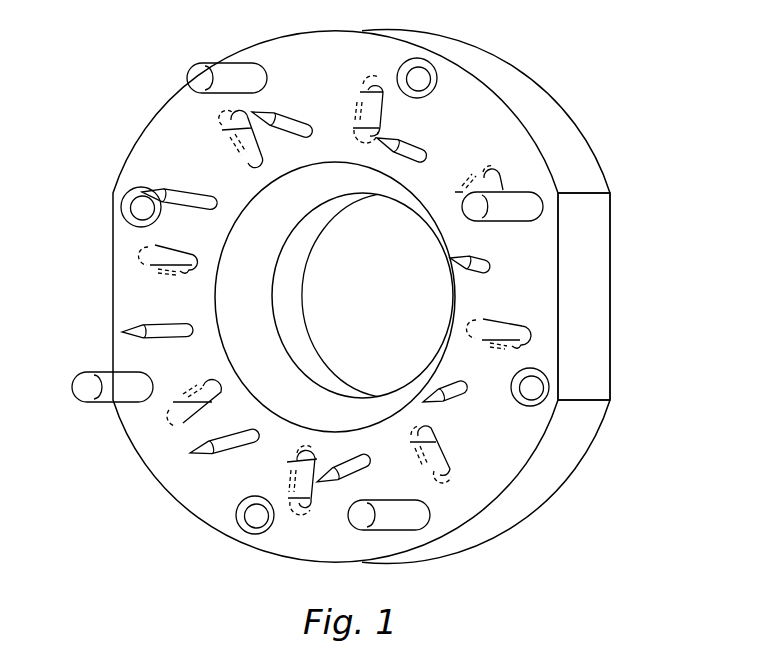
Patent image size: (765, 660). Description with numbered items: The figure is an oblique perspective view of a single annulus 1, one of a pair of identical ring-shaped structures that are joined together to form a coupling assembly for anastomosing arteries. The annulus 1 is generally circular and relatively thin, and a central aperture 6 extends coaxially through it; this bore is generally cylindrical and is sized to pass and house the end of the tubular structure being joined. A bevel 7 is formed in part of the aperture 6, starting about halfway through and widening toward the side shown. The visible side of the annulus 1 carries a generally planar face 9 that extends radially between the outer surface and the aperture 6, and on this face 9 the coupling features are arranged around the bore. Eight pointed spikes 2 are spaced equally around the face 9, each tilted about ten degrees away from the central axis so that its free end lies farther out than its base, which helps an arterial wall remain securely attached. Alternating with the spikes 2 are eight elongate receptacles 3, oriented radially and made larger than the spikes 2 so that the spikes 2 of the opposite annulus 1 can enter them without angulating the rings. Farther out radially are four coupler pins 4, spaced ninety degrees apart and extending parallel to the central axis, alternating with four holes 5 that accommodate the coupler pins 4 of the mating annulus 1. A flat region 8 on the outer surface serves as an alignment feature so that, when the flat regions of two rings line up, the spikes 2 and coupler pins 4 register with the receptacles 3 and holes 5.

The annulus 1 is at (527, 84).
The spikes 2 is at (122, 331).
The receptacles 3 is at (447, 473).
The coupler pins 4 is at (195, 70).
The holes 5 is at (238, 527).
The aperture 6 is at (307, 361).
The bevel 7 is at (263, 247).
The flat region 8 is at (605, 285).
The face 9 is at (173, 140).